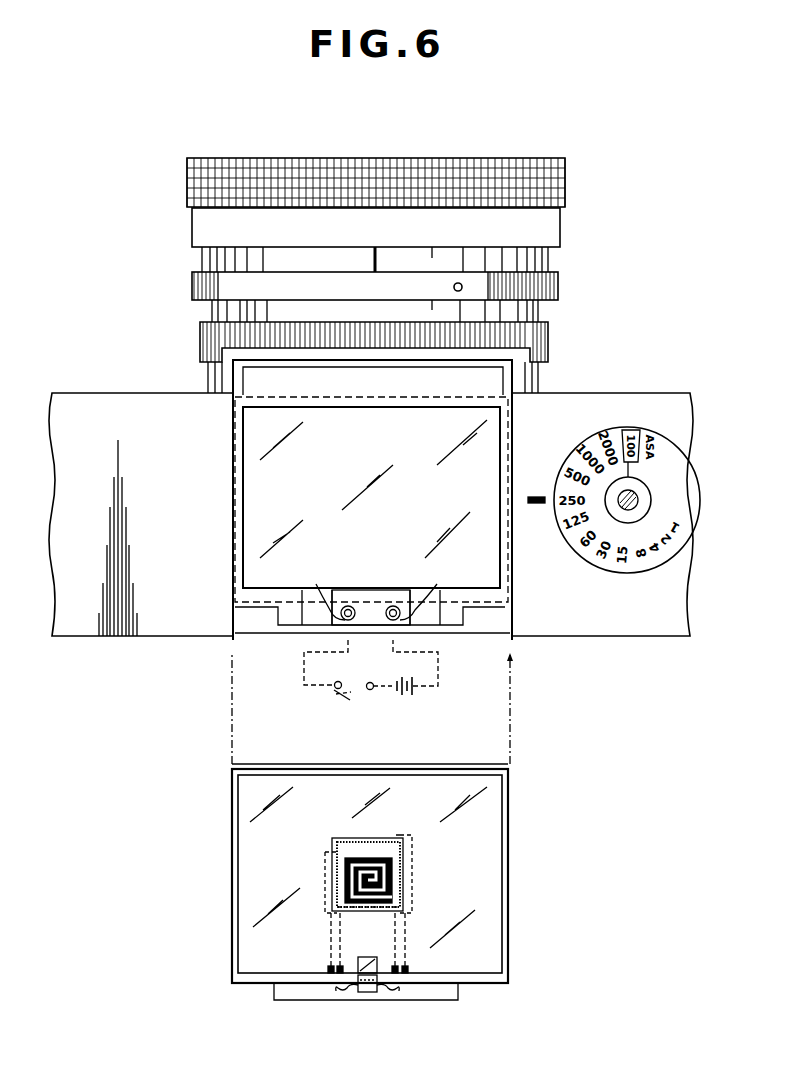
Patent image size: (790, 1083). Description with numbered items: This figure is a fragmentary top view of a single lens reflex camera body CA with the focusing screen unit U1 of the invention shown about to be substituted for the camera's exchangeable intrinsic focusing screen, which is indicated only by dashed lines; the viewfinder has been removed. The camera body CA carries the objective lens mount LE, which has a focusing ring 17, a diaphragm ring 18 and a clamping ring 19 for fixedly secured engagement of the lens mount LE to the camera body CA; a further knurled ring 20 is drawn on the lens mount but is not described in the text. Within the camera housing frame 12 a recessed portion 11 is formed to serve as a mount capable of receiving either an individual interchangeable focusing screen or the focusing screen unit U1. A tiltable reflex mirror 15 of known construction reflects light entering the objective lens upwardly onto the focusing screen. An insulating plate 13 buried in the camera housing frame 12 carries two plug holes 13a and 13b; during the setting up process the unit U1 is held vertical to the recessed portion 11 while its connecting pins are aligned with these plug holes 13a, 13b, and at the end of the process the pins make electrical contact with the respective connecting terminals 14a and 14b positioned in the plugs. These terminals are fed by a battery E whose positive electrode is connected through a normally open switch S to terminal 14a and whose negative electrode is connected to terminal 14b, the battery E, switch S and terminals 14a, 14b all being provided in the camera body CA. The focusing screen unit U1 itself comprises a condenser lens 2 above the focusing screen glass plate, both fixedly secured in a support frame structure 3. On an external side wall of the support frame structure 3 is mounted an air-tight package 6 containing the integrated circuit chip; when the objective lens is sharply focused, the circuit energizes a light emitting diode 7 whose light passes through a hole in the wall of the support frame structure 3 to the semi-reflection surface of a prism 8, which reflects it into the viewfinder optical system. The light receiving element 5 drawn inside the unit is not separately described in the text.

The objective lens mount LE is at (574, 231).
The camera body CA is at (592, 387).
The focusing screen unit U1 is at (520, 794).
The diaphragm ring 18 is at (187, 181).
The clamping ring 19 is at (192, 284).
The mount ring 20 is at (200, 350).
The focusing ring 17 is at (215, 383).
The recessed portion 11 is at (262, 455).
The reflex mirror 15 is at (262, 523).
The camera housing frame 12 is at (497, 618).
The insulating plate 13 is at (377, 608).
The plug 13a is at (348, 604).
The plug 13b is at (395, 604).
The power supply terminal 14a is at (324, 587).
The power supply terminal 14b is at (427, 587).
The switch S is at (350, 693).
The battery E is at (406, 694).
The condenser lens 2 is at (492, 832).
The support frame structure 3 is at (504, 895).
The light receiving element 5 is at (340, 833).
The prism 8 is at (410, 885).
The light emitting diode 7 is at (365, 990).
The circuit package 6 is at (430, 995).